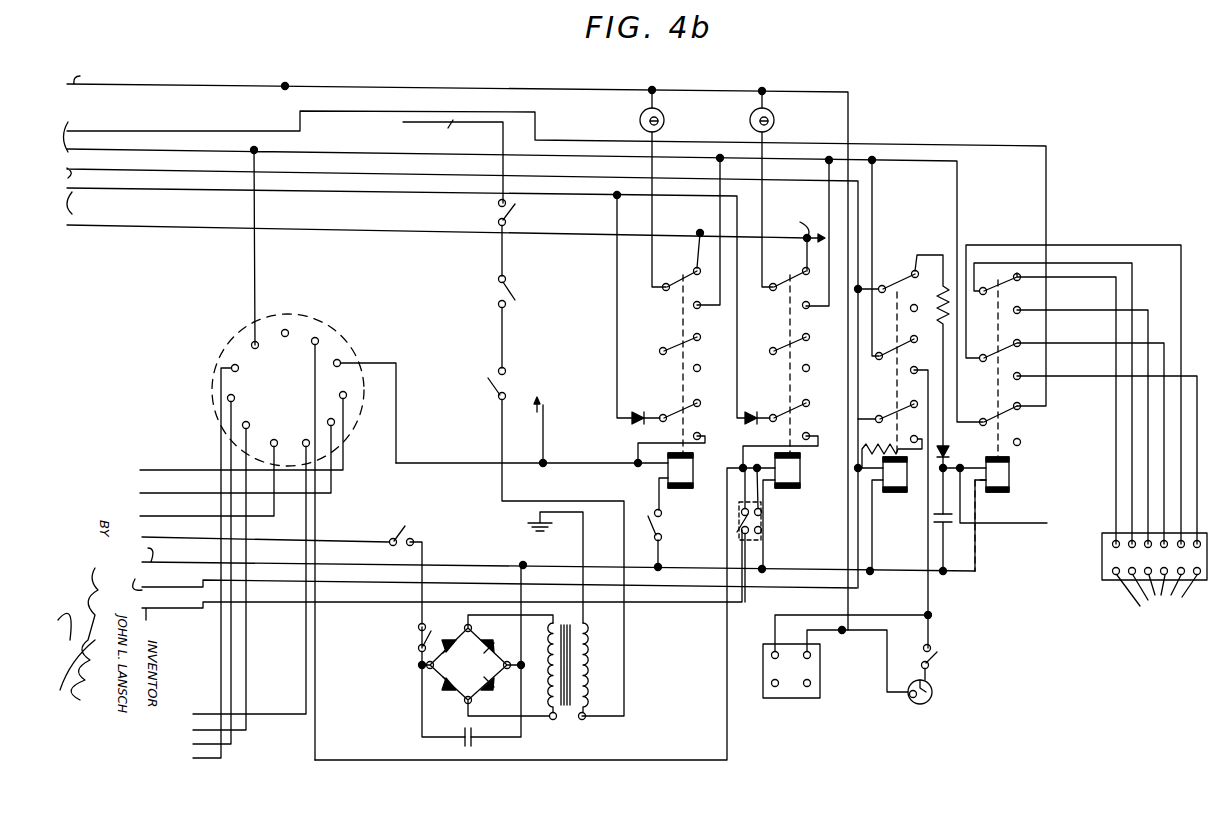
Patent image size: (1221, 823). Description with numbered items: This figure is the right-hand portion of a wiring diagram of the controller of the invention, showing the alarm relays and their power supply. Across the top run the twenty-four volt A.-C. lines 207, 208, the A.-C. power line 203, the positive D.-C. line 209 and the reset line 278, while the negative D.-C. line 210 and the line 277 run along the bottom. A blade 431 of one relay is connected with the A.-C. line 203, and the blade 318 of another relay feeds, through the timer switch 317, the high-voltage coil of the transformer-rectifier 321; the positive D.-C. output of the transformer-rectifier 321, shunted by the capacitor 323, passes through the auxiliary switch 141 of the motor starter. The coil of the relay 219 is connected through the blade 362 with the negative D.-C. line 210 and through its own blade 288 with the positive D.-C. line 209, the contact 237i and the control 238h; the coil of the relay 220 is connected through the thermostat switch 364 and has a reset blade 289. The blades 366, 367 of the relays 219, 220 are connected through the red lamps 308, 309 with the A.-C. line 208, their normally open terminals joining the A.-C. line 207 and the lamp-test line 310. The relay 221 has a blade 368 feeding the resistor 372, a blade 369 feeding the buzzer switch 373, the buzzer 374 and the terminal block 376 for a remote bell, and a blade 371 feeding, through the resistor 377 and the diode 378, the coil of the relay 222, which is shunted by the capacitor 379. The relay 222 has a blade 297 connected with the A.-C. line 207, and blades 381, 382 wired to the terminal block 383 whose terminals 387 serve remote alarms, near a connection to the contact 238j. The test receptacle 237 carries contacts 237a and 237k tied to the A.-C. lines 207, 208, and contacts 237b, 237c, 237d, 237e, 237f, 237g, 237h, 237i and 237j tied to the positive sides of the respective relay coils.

The A.-C. line 208 is at (457, 349).
The A.-C. line 207 is at (555, 257).
The power line 203 is at (453, 161).
The positive D.-C. line 209 is at (464, 400).
The line 278 is at (439, 231).
The lamp-test line 310 is at (796, 217).
The red alarm lamp 308 is at (664, 118).
The red alarm lamp 309 is at (774, 118).
The blade 431 is at (507, 216).
The blade 318 is at (509, 296).
The switch 317 is at (490, 386).
The contact 238h is at (573, 432).
The blade 366 is at (678, 280).
The blade 288 is at (672, 412).
The relay 219 is at (693, 470).
The blade 362 is at (652, 528).
The blade 367 is at (786, 280).
The blade 289 is at (783, 412).
The relay 220 is at (800, 470).
The switch 364 is at (736, 532).
The blade 371 is at (890, 287).
The resistor 377 is at (942, 285).
The blade 369 is at (891, 358).
The blade 368 is at (891, 418).
The resistor 372 is at (870, 445).
The relay 221 is at (897, 493).
The diode 378 is at (948, 464).
The capacitor 379 is at (954, 544).
The relay 222 is at (1009, 470).
The blade 381 is at (988, 294).
The blade 382 is at (1005, 345).
The blade 297 is at (988, 418).
The contact 238j is at (1062, 541).
The terminal block 383 is at (1097, 570).
The terminals 387 is at (1157, 599).
The test receptacle 237 is at (215, 357).
The contact 237a is at (252, 342).
The contact 237b is at (231, 368).
The contact 237c is at (228, 398).
The contact 237d is at (246, 421).
The contact 237e is at (273, 440).
The contact 237f is at (303, 442).
The contact 237g is at (331, 418).
The contact 237h is at (345, 400).
The contact 237i is at (341, 361).
The contact 237j is at (319, 340).
The contact 237k is at (286, 328).
The negative D.-C. line 210 is at (546, 556).
The line 277 is at (487, 577).
The auxiliary switch 141 is at (395, 539).
The capacitor 323 is at (470, 745).
The transformer-rectifier 321 is at (543, 722).
The terminal block 376 is at (803, 700).
The buzzer switch 373 is at (937, 651).
The buzzer 374 is at (930, 698).